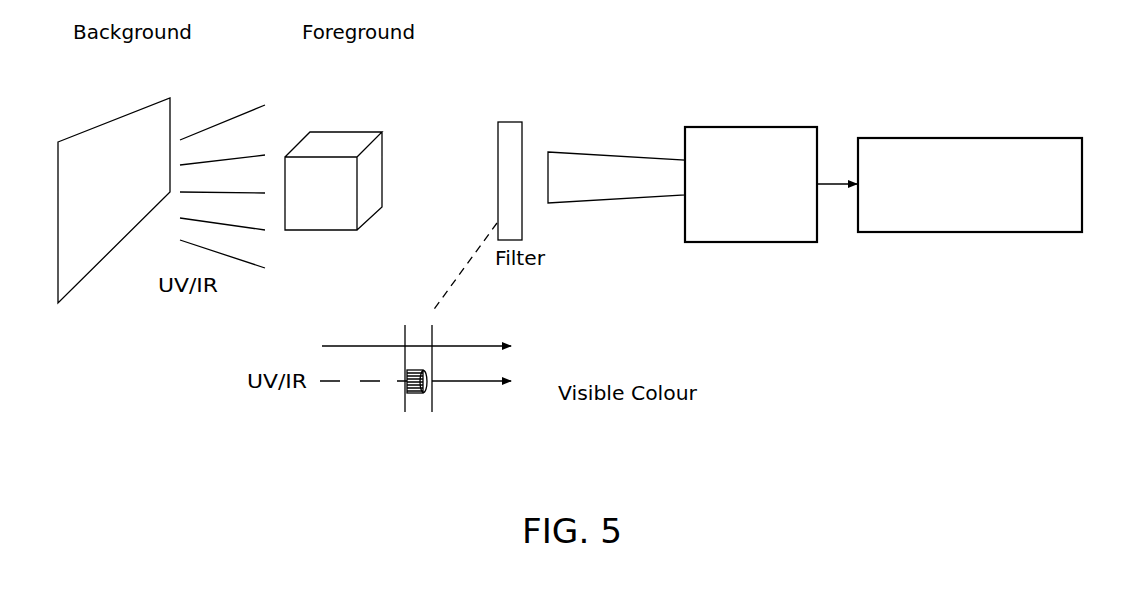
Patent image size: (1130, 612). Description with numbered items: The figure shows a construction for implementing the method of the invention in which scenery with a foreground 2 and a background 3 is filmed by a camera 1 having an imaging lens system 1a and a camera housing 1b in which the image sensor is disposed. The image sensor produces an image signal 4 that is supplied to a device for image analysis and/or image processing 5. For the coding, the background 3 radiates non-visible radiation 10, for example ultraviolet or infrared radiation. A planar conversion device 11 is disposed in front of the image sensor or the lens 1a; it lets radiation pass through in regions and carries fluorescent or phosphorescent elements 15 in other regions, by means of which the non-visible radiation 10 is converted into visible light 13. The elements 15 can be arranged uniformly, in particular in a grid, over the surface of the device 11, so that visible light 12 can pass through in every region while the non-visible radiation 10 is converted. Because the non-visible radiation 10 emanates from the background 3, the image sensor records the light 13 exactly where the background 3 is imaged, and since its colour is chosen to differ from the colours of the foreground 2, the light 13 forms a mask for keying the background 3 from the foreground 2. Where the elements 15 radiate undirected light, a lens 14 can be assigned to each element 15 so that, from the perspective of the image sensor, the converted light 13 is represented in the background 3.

The camera 1 is at (682, 160).
The imaging lens system 1a is at (618, 156).
The camera housing 1b is at (720, 126).
The foreground 2 is at (343, 131).
The background 3 is at (116, 118).
The image signal 4 is at (836, 182).
The device for image analysis and/or image processing 5 is at (972, 137).
The non-visible radiation 10 is at (228, 119).
The planar conversion device 11 is at (510, 121).
The visible light 12 is at (348, 346).
The visible light produced by conversion 13 is at (475, 380).
The lens 14 is at (427, 418).
The elements 15 is at (412, 416).